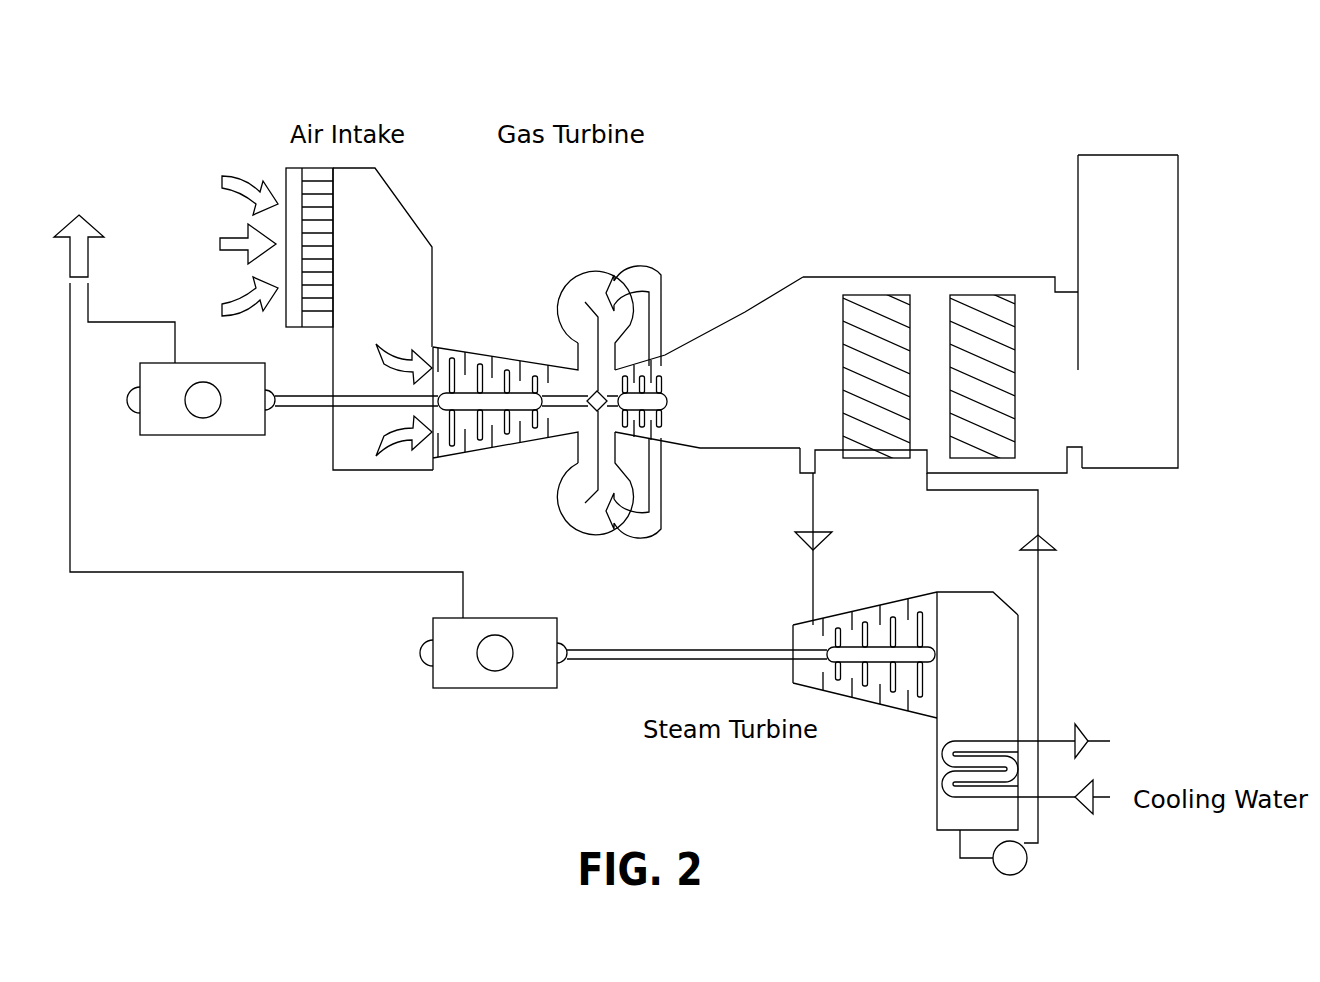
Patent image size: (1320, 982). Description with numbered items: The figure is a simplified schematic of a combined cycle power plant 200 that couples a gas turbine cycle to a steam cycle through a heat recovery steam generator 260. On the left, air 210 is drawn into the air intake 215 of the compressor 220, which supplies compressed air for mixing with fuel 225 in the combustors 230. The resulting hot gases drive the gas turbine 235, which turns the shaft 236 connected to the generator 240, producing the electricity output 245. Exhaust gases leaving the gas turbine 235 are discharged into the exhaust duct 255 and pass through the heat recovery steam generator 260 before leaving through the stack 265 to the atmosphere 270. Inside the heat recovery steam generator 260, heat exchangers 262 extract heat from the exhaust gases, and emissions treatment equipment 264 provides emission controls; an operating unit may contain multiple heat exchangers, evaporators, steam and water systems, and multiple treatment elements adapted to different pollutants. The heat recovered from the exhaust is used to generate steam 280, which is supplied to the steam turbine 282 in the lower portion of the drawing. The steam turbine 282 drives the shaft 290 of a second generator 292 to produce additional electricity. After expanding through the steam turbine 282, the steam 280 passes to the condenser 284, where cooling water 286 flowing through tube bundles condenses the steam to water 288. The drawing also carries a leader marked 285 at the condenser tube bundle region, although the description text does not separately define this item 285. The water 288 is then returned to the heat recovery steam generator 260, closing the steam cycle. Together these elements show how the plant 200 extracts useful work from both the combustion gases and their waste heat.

The combined cycle power plant 200 is at (188, 44).
The air 210 is at (233, 243).
The air intake 215 is at (333, 162).
The compressor 220 is at (513, 455).
The fuel 225 is at (660, 272).
The combustors 230 is at (556, 310).
The gas turbine 235 is at (666, 438).
The shaft 236 is at (662, 358).
The generator 240 is at (203, 437).
The electricity output 245 is at (58, 150).
The exhaust duct 255 is at (743, 313).
The heat recovery steam generator 260 is at (930, 277).
The heat exchangers 262 is at (867, 292).
The emissions treatment equipment 264 is at (985, 292).
The stack 265 is at (1178, 293).
The atmosphere 270 is at (1122, 155).
The steam 280 is at (815, 500).
The steam turbine 282 is at (935, 598).
The condenser 284 is at (938, 757).
The cooling coil 285 is at (950, 797).
The cooling water 286 is at (1096, 741).
The water 288 is at (1040, 520).
The shaft 290 is at (695, 648).
The generator 292 is at (515, 617).